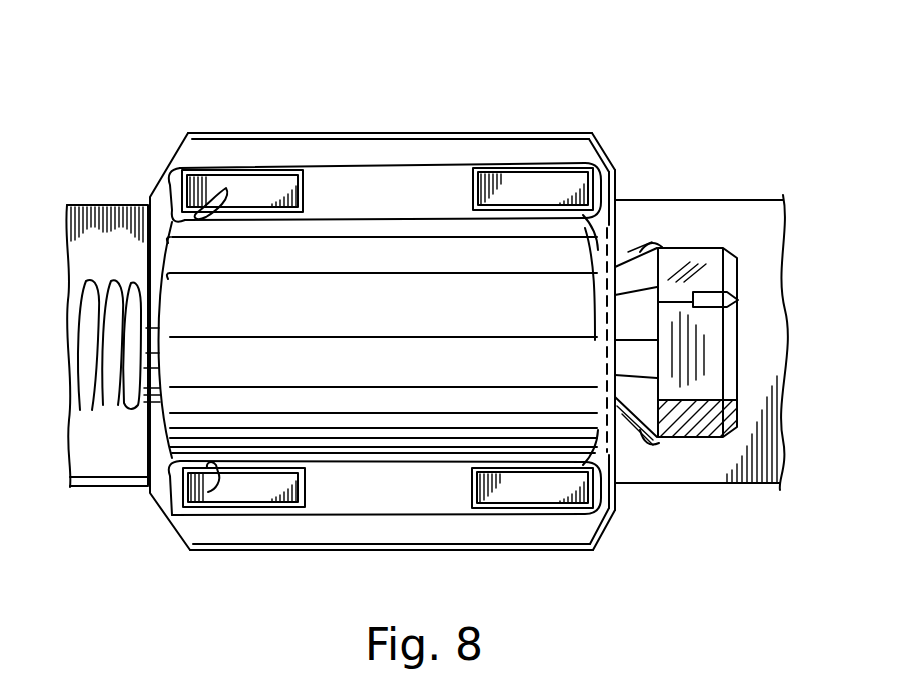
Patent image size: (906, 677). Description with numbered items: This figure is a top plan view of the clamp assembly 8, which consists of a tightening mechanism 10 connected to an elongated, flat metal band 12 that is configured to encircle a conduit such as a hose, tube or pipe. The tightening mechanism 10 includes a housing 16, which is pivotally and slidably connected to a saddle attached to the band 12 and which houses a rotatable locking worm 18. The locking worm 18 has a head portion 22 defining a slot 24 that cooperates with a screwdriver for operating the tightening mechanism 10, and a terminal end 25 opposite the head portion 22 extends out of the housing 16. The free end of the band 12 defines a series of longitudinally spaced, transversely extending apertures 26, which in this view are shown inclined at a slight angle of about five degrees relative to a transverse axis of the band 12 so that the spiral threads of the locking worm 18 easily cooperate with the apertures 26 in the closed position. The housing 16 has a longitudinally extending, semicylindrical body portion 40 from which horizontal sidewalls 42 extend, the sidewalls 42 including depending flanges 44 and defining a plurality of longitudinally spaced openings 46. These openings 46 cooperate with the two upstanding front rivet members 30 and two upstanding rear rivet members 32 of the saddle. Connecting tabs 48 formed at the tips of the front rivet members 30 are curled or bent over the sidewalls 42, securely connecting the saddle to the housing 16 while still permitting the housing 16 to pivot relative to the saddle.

The clamp assembly 8 is at (143, 131).
The tightening mechanism 10 is at (331, 124).
The band 12 is at (707, 228).
The housing 16 is at (522, 133).
The locking worm 18 is at (643, 270).
The head portion 22 is at (738, 373).
The slot 24 is at (740, 302).
The terminal end 25 is at (137, 351).
The apertures 26 is at (102, 362).
The front rivet members 30 is at (257, 189).
The rear rivet members 32 is at (522, 190).
The body portion 40 is at (364, 330).
The sidewalls 42 is at (360, 204).
The flanges 44 is at (593, 139).
The openings 46 is at (209, 166).
The connecting tabs 48 is at (226, 188).